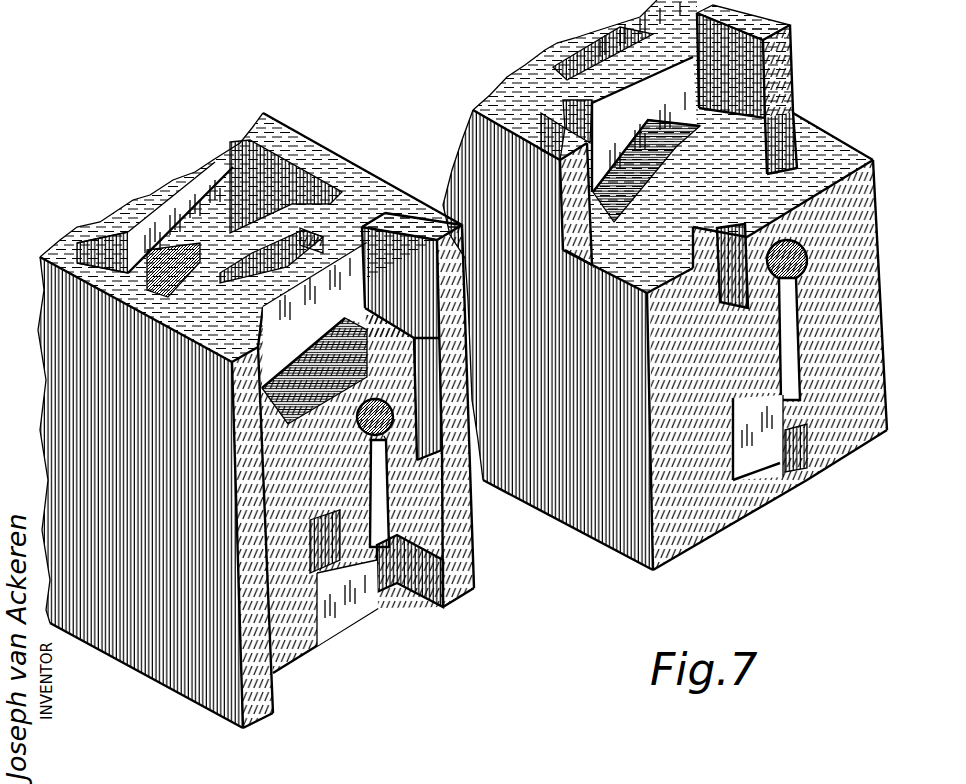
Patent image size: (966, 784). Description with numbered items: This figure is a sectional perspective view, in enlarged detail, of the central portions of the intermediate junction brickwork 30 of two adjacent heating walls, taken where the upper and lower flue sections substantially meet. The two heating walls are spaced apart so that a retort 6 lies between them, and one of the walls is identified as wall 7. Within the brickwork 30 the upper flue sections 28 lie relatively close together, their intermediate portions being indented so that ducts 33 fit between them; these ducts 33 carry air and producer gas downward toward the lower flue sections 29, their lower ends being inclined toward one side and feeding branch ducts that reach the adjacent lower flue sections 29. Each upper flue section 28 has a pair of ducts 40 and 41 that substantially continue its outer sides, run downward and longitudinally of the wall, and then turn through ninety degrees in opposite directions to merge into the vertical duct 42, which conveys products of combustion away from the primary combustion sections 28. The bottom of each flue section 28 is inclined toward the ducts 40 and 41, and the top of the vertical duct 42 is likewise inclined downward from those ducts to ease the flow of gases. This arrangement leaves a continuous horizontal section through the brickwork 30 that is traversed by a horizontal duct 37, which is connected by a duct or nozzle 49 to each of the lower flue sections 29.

The retort 6 is at (440, 148).
The building block 7 is at (60, 300).
The upper flue section 28 is at (187, 207).
The lower flue section 29 is at (348, 618).
The intermediate junction brickwork 30 is at (62, 426).
The duct 33 is at (285, 215).
The horizontal duct 37 is at (395, 437).
The duct 40 is at (340, 392).
The duct 41 is at (433, 443).
The vertical duct 42 is at (757, 467).
The duct or nozzle 49 is at (405, 540).